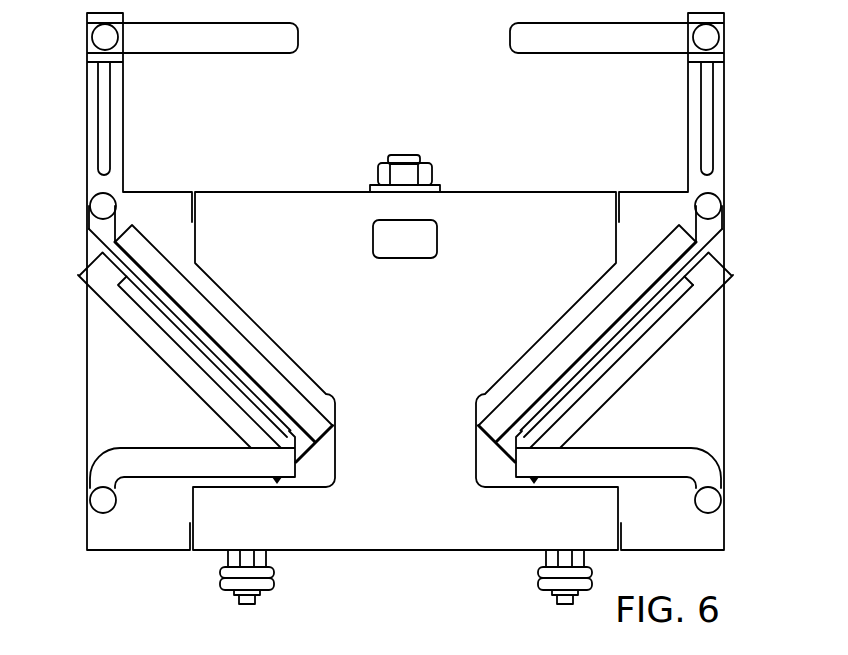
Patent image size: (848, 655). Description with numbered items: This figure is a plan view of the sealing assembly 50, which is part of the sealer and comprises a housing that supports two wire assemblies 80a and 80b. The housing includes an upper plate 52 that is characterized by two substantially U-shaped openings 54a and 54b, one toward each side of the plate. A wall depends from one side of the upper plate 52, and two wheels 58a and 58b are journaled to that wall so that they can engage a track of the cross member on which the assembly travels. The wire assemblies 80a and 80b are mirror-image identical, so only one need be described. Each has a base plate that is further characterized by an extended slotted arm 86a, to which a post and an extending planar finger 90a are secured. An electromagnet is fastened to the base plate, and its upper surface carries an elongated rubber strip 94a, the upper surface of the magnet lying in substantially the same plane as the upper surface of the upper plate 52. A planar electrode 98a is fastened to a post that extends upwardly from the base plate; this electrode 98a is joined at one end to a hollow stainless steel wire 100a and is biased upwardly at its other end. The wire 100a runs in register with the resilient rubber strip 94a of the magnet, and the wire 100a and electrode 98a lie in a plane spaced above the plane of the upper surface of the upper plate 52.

The sealing assembly 50 is at (745, 377).
The upper plate 52 is at (418, 360).
The U-shaped opening 54a is at (576, 315).
The U-shaped opening 54b is at (238, 312).
The wheel 58a is at (541, 590).
The wheel 58b is at (224, 590).
The wire assembly 80a is at (706, 279).
The wire assembly 80b is at (119, 284).
The extended slotted arm 86a is at (722, 115).
The planar finger 90a is at (627, 55).
The elongated rubber strip 94a is at (586, 396).
The planar electrode 98a is at (712, 478).
The hollow stainless steel wire 100a is at (638, 326).